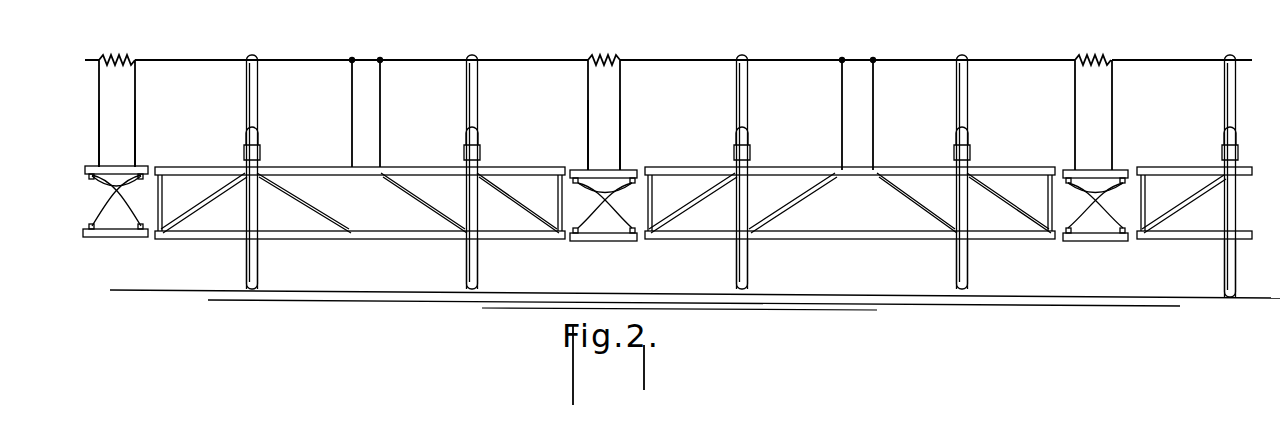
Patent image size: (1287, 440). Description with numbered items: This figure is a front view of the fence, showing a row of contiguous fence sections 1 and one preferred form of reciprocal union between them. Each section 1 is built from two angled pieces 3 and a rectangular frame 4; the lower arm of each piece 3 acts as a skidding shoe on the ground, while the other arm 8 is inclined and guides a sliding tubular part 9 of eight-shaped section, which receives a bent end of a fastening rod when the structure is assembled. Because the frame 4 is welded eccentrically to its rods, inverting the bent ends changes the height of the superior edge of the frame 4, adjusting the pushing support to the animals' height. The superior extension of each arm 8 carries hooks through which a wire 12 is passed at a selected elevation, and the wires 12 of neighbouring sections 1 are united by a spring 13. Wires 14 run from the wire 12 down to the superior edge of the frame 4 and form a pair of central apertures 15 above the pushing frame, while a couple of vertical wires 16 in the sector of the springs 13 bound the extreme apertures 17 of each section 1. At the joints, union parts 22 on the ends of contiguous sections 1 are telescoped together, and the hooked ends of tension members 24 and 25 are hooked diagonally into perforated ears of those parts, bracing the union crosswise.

The section 1 is at (299, 264).
The piece 3 is at (476, 263).
The rectangular frame 4 is at (383, 246).
The arm 8 is at (246, 118).
The sliding tubular part 9 is at (261, 151).
The wire 12 is at (455, 57).
The spring 13 is at (118, 57).
The wire 14 is at (379, 86).
The central aperture 15 is at (288, 123).
The vertical wire 16 is at (100, 137).
The extreme aperture 17 is at (523, 70).
The part 22 is at (598, 243).
The tension member 24 is at (583, 184).
The tension member 25 is at (630, 185).